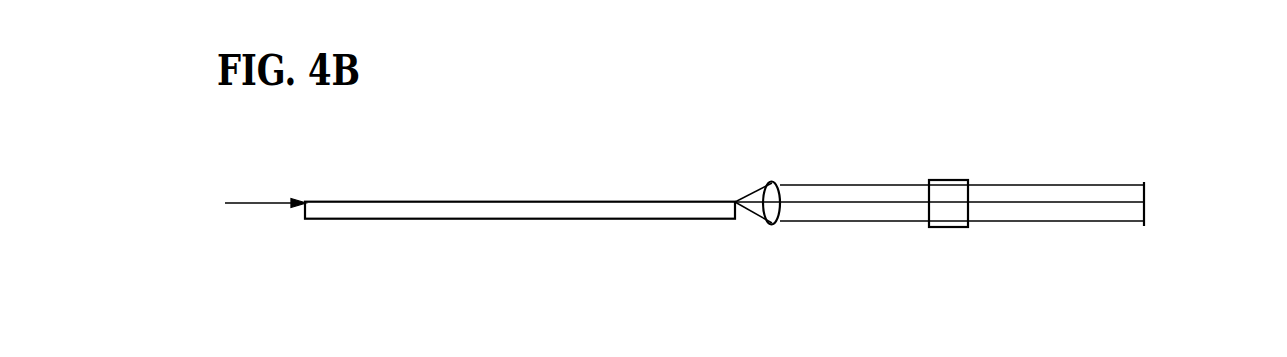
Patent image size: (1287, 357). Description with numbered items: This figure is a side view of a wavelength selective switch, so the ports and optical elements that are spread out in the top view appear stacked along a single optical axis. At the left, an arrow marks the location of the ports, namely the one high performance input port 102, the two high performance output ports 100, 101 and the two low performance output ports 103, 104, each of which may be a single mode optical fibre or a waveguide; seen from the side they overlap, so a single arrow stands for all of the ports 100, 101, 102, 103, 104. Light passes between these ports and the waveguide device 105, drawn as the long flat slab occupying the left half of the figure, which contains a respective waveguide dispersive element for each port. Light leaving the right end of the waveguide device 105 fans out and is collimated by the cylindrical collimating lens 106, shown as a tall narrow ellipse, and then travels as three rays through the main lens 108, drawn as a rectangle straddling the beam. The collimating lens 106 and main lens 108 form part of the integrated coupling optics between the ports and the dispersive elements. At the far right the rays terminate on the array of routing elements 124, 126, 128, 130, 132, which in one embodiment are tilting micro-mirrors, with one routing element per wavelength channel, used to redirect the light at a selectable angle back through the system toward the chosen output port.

The high performance output port 100 is at (251, 179).
The high performance output port 101 is at (251, 179).
The high performance input port 102 is at (251, 179).
The low performance output port 103 is at (251, 179).
The low performance output port 104 is at (243, 202).
The waveguide device 105 is at (487, 201).
The cylindrical collimating lens 106 is at (771, 181).
The main lens 108 is at (952, 180).
The routing element 124 is at (995, 176).
The routing element 126 is at (995, 176).
The routing element 128 is at (995, 176).
The routing element 130 is at (995, 176).
The routing element 132 is at (1144, 182).